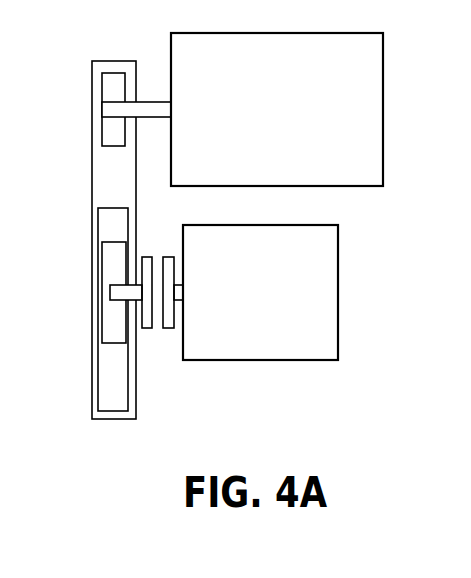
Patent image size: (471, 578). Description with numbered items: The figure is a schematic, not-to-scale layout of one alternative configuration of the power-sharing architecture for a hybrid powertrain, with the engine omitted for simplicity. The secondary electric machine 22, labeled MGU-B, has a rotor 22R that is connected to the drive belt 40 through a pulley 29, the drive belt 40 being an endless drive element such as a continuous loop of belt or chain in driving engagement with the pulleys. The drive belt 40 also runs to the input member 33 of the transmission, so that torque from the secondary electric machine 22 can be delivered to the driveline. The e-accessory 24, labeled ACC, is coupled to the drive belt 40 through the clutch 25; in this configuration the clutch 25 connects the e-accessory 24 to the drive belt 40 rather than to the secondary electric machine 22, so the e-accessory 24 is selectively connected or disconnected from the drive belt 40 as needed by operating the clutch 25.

The secondary electric machine 22 is at (383, 106).
The rotor of the secondary electric machine 22R is at (153, 101).
The e-accessory 24 is at (338, 293).
The clutch 25 is at (165, 362).
The pulley 29 is at (112, 88).
The input member 33 is at (112, 383).
The drive belt 40 is at (112, 173).